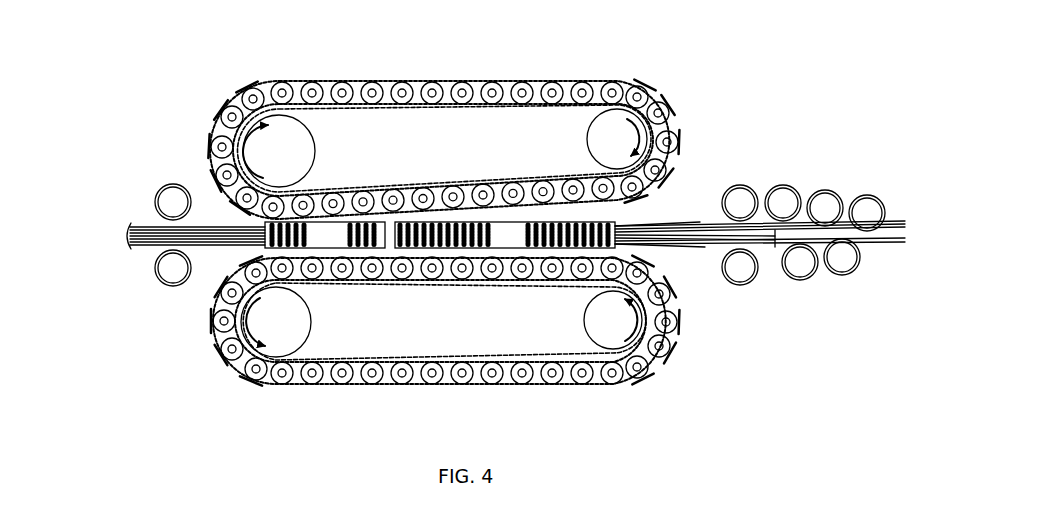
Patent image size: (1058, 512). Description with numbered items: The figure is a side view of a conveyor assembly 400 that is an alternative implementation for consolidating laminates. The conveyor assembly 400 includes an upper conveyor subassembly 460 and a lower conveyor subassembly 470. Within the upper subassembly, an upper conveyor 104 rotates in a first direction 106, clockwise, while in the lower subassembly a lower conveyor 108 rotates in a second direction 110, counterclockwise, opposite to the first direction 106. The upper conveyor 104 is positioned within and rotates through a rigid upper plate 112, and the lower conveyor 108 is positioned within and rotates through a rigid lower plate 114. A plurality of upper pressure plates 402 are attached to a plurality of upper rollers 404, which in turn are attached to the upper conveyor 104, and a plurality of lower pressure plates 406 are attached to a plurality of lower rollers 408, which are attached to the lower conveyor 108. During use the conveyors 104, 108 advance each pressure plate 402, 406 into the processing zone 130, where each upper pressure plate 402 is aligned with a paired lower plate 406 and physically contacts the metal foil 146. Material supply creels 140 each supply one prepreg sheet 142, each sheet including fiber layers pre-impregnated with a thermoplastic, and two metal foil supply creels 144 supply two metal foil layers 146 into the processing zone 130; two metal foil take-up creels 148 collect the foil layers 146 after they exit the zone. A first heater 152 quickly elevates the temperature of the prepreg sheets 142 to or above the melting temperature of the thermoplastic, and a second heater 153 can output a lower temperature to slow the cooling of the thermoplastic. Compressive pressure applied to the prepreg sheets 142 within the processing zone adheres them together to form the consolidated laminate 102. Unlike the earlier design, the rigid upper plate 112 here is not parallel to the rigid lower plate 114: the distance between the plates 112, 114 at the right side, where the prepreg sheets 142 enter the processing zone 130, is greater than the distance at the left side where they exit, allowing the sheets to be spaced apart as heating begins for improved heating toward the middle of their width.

The conveyor assembly 400 is at (158, 60).
The consolidated laminate 102 is at (148, 252).
The upper conveyor 104 is at (512, 110).
The first direction 106 is at (250, 150).
The lower conveyor 108 is at (575, 357).
The second direction 110 is at (250, 313).
The rigid upper plate 112 is at (420, 185).
The rigid lower plate 114 is at (383, 285).
The processing zone 130 is at (652, 217).
The material supply creels 140 is at (825, 200).
The prepreg sheets 142 is at (775, 248).
The metal foil supply creels 144 is at (742, 200).
The metal foil layers 146 is at (688, 222).
The metal foil take-up creels 148 is at (170, 198).
The first heater 152 is at (505, 235).
The second heater 153 is at (325, 235).
The upper pressure plates 402 is at (236, 90).
The upper rollers 404 is at (372, 92).
The lower pressure plates 406 is at (300, 387).
The lower rollers 408 is at (370, 387).
The upper conveyor subassembly 460 is at (702, 98).
The lower conveyor subassembly 470 is at (742, 386).